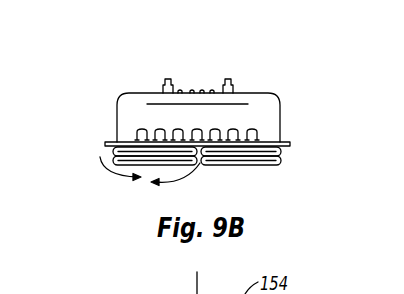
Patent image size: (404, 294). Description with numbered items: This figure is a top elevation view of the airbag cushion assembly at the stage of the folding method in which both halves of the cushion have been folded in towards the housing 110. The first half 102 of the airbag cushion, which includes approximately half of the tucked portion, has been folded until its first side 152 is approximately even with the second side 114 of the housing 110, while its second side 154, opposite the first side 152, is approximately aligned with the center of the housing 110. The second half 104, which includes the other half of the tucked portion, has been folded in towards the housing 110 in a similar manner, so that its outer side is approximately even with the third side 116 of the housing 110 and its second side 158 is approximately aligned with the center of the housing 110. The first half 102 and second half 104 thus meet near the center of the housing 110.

The first half 102 is at (286, 176).
The second half 104 is at (147, 187).
The housing 110 is at (272, 110).
The second side 114 is at (280, 125).
The third side 116 is at (117, 115).
The first side 152 is at (281, 163).
The second side 154 is at (113, 153).
The second side 158 is at (198, 146).